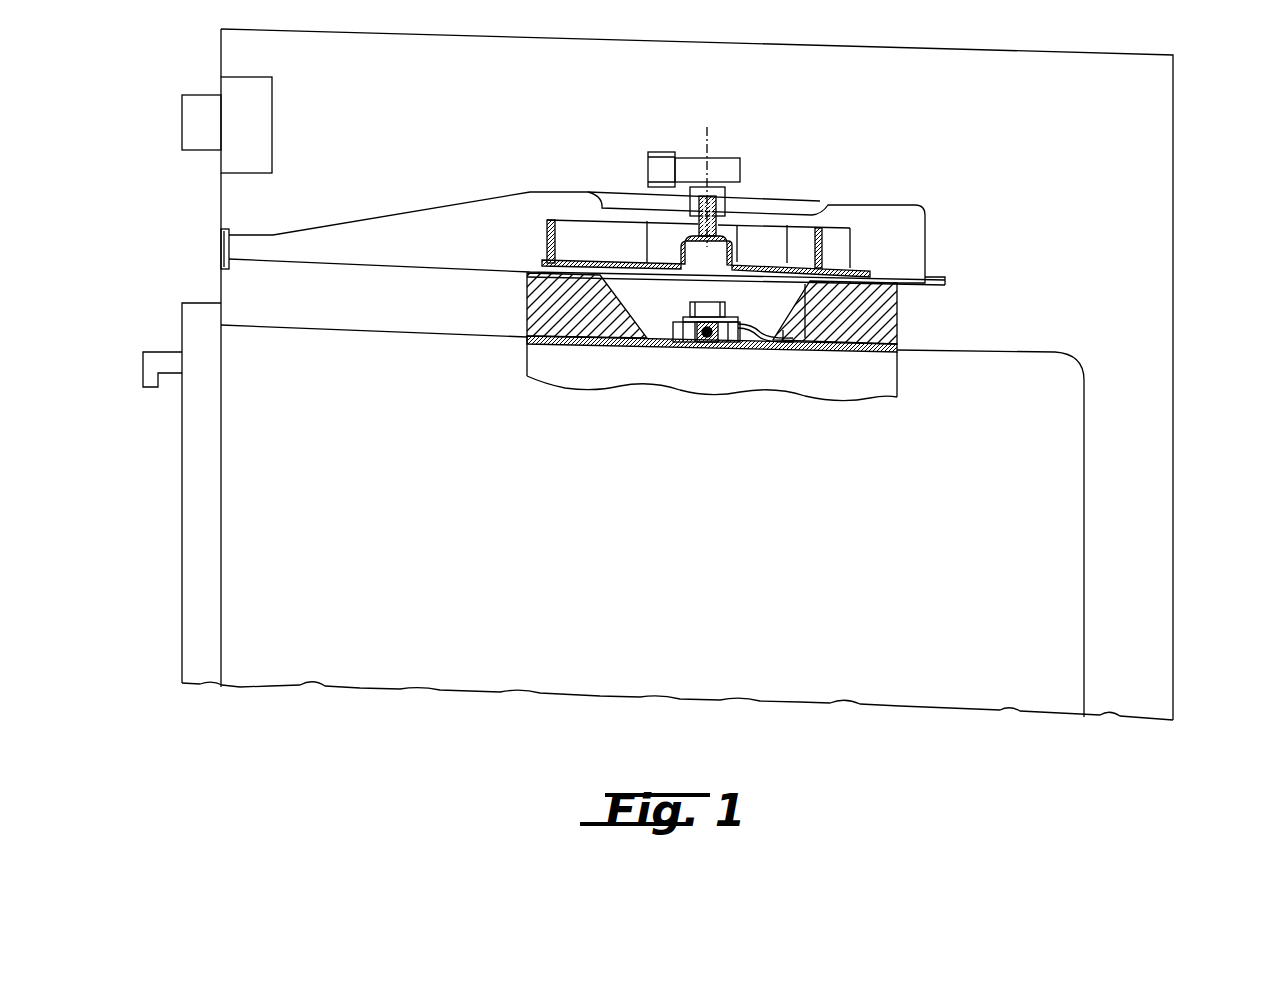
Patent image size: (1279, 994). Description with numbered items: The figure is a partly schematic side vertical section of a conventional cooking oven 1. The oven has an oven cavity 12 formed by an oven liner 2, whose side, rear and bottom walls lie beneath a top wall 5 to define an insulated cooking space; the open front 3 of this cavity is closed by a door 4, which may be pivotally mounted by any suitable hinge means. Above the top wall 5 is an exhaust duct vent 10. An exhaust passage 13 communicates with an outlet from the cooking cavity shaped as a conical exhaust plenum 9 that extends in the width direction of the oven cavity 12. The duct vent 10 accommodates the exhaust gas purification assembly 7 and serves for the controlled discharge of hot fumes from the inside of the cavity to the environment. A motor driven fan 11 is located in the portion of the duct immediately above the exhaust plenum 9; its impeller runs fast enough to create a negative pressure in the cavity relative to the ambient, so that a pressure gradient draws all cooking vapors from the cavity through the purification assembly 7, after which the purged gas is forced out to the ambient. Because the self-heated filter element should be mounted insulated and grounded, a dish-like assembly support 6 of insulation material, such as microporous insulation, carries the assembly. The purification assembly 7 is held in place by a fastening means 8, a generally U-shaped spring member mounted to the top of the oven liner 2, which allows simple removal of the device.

The cooking oven 1 is at (1196, 90).
The oven liner 2 is at (1084, 553).
The front opening 3 is at (226, 549).
The oven door 4 is at (196, 472).
The top wall 5 is at (1003, 350).
The assembly support 6 is at (692, 353).
The exhaust gas purification assembly 7 is at (682, 306).
The fastening means 8 is at (755, 320).
The exhaust plenum 9 is at (610, 288).
The duct vent 10 is at (907, 222).
The fan 11 is at (752, 186).
The oven cavity 12 is at (695, 602).
The exhaust passage 13 is at (414, 227).